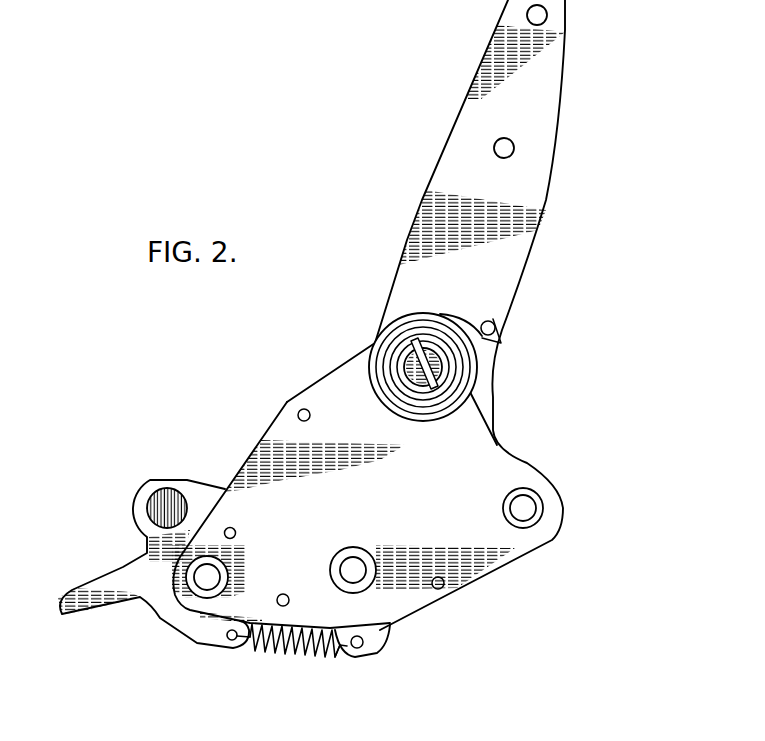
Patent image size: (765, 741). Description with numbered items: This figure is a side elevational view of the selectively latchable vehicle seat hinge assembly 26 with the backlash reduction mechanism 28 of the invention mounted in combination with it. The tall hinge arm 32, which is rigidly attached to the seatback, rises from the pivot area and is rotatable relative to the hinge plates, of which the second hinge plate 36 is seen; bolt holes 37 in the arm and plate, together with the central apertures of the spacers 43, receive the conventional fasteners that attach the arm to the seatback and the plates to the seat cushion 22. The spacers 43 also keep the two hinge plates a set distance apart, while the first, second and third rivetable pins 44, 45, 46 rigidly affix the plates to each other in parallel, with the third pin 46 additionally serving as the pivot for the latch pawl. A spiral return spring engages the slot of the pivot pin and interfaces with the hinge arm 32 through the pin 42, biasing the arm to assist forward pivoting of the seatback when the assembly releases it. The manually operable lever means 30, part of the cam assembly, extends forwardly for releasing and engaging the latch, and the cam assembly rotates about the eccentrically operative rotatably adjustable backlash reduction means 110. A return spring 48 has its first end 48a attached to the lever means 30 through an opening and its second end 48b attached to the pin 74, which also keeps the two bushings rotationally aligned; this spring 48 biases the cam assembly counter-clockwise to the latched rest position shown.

The seat cushion 22 is at (322, 6).
The vehicle seat hinge assembly 26 is at (326, 327).
The backlash reduction mechanism 28 is at (212, 460).
The manually operable lever means 30 is at (108, 583).
The hinge arm 32 is at (538, 180).
The second hinge plate 36 is at (453, 494).
The bolt holes 37 is at (507, 145).
The pin 42 is at (486, 322).
The spacers 43 is at (542, 507).
The first rivetable pin 44 is at (157, 505).
The second rivetable pin 45 is at (298, 414).
The third rivetable pin 46 is at (281, 595).
The return spring 48 is at (288, 655).
The first end of return spring 48a is at (242, 652).
The second end of return spring 48b is at (332, 652).
The pin 74 is at (383, 645).
The eccentrically operative rotatably adjustable backlash reduction means 110 is at (235, 531).